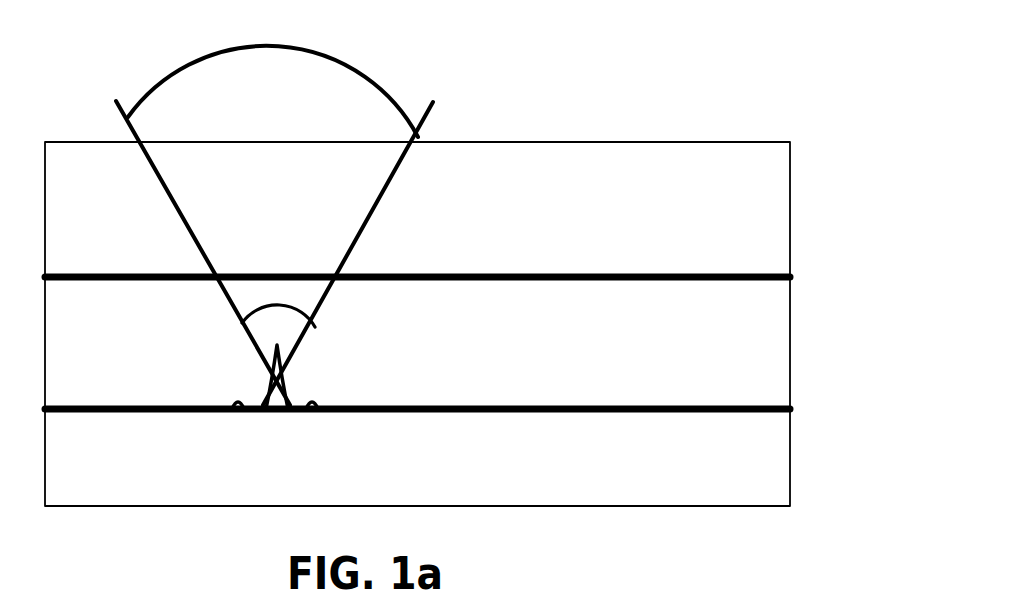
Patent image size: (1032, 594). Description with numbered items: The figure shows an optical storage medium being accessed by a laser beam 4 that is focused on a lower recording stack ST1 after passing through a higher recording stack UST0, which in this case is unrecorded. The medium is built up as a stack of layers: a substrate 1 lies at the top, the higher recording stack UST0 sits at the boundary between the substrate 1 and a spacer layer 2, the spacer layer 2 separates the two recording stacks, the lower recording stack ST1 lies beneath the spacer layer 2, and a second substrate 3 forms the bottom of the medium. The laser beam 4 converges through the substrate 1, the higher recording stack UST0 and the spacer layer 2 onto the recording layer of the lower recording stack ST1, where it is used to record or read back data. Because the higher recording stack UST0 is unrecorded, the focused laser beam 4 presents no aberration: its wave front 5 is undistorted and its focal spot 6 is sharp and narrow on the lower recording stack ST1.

The substrate 1 is at (777, 160).
The spacer layer 2 is at (777, 349).
The second substrate 3 is at (768, 473).
The laser beam 4 is at (435, 104).
The wave front 5 is at (277, 304).
The focal spot 6 is at (292, 388).
The unrecorded higher recording stack UST0 is at (790, 278).
The lower recording stack ST1 is at (790, 409).